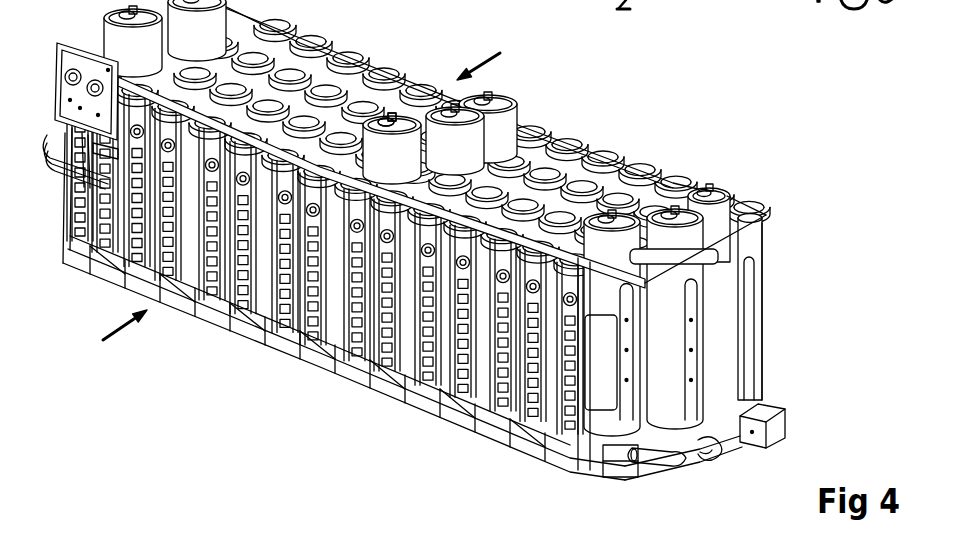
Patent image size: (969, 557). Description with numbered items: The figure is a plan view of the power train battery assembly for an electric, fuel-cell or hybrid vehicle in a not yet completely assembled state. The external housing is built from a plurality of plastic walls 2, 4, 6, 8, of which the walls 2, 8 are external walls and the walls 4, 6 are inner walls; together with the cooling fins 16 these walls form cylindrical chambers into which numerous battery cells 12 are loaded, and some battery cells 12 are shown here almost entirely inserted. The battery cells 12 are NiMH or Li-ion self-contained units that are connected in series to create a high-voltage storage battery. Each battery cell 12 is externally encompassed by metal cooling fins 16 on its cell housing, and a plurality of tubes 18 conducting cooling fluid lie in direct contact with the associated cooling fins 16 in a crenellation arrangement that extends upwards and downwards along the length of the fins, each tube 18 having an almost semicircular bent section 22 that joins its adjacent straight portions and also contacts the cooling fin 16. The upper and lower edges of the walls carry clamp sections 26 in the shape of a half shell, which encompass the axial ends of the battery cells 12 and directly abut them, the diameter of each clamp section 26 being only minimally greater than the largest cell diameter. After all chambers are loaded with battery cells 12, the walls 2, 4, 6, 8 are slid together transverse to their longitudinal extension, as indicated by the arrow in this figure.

The wall 2 is at (553, 470).
The wall 4 is at (667, 463).
The wall 6 is at (703, 460).
The wall 8 is at (773, 440).
The battery cell 12 is at (723, 187).
The cooling fin 16 is at (333, 83).
The tube 18 is at (383, 110).
The bent section 22 is at (383, 110).
The clamp section 26 is at (553, 150).